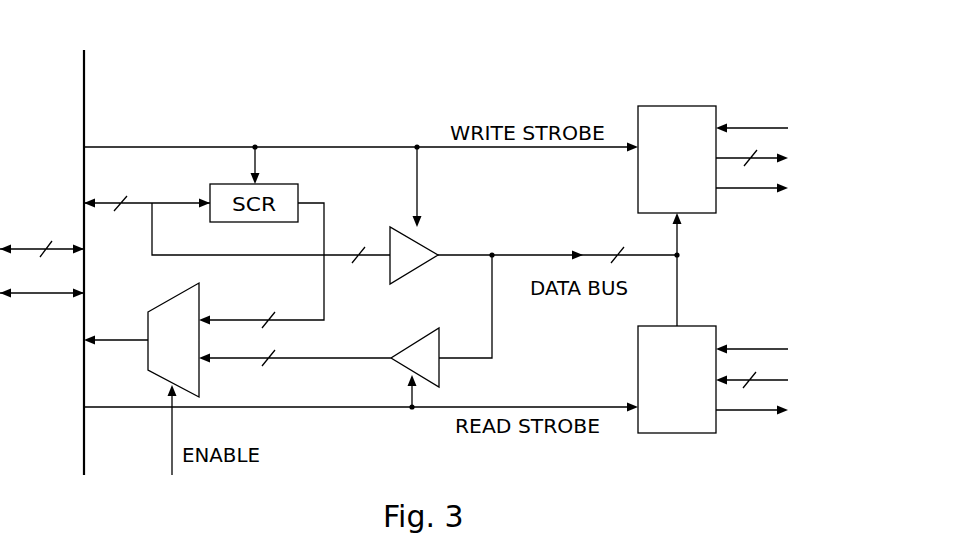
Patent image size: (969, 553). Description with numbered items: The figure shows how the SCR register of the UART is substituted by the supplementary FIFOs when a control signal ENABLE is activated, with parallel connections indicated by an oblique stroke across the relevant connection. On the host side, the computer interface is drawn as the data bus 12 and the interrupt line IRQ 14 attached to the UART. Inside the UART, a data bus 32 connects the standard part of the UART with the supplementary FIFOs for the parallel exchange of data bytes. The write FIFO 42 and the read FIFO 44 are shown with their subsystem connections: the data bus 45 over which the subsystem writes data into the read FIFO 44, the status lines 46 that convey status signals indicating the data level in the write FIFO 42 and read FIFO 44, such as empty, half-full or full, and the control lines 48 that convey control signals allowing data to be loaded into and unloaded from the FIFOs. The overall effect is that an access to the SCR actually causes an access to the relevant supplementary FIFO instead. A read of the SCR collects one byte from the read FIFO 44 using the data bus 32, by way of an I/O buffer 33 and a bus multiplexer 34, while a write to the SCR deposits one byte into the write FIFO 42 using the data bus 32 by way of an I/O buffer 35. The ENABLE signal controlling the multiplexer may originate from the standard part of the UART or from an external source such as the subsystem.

The data bus 12 is at (22, 246).
The interrupt line IRQ 14 is at (22, 298).
The data bus 32 is at (137, 212).
The I/O buffer 33 is at (409, 344).
The bus multiplexer 34 is at (148, 350).
The I/O buffer 35 is at (410, 272).
The write FIFO 42 is at (670, 106).
The read FIFO 44 is at (657, 434).
The data bus 45 is at (763, 163).
The status lines 46 is at (740, 190).
The control lines 48 is at (753, 128).